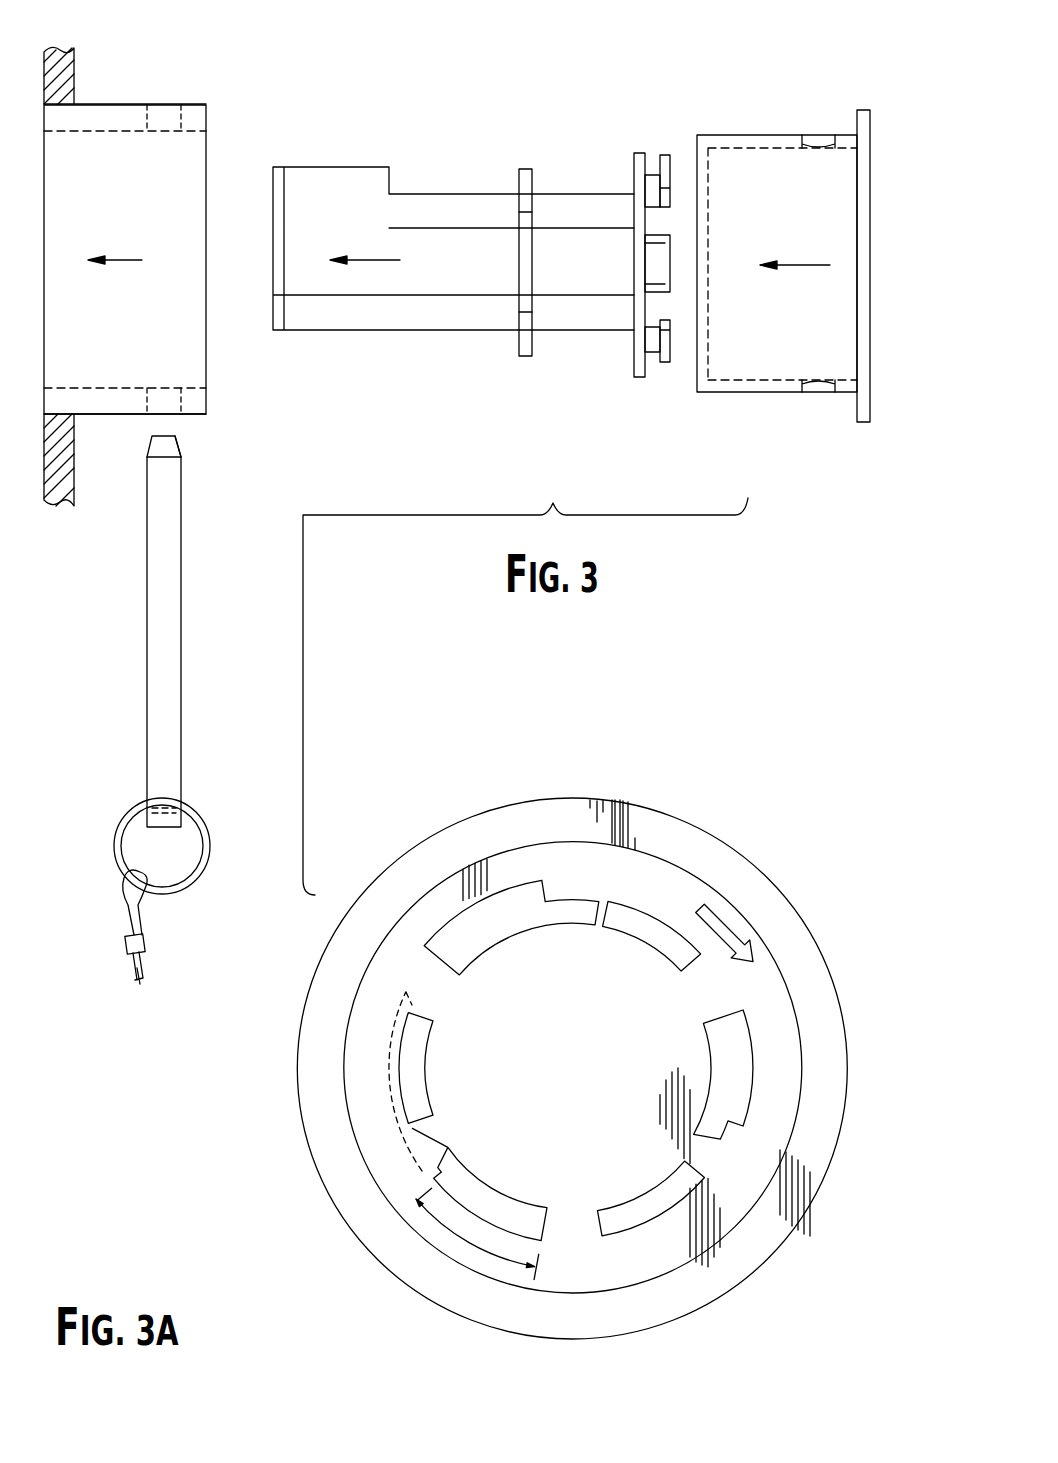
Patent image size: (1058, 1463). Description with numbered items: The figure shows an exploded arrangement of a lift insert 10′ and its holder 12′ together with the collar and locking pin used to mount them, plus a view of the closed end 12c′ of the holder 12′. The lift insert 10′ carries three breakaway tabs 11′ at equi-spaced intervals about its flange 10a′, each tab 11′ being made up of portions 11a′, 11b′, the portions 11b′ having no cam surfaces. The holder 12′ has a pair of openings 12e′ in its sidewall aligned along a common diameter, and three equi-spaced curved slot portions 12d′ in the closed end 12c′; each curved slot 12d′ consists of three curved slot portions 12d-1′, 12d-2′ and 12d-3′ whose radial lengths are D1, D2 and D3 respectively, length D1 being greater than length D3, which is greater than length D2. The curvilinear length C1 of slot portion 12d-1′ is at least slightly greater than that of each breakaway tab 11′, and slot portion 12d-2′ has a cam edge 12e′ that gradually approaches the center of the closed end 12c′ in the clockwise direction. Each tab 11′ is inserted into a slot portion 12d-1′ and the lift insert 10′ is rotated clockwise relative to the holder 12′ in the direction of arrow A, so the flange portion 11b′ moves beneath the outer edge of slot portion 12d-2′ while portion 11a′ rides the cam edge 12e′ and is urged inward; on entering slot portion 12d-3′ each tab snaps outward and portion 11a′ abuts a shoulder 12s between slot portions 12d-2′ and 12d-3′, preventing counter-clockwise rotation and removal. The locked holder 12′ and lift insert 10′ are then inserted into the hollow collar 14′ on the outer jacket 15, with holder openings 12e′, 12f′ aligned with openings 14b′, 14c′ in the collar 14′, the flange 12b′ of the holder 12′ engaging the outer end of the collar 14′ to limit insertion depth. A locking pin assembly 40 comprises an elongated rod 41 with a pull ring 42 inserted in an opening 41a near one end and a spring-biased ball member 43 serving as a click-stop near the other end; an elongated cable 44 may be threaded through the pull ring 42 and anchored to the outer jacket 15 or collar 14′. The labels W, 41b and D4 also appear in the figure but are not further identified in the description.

In FIG. 3, the wall W is at (78, 98).
In FIG. 3, the outer jacket 15 is at (72, 476).
In FIG. 3, the hollow collar 14′ is at (180, 55).
In FIG. 3, the collar opening 14b′ is at (170, 105).
In FIG. 3, the collar opening 14c′ is at (165, 418).
In FIG. 3, the lift insert 10′ is at (511, 83).
In FIG. 3, the flange 10a′ is at (638, 380).
In FIG. 3, the breakaway tab 11′ is at (673, 256).
In FIG. 3, the tab portion 11a′ is at (648, 172).
In FIG. 3, the flange portion of tab 11b′ is at (672, 158).
In FIG. 3, the holder 12′ is at (797, 249).
In FIG. 3A, the holder 12′ is at (680, 783).
In FIG. 3, the flange 12b′ is at (863, 108).
In FIG. 3, the opening / cam edge 12e′ is at (818, 137).
In FIG. 3A, the opening / cam edge 12e′ is at (393, 1129).
In FIG. 3, the holder opening 12f′ is at (818, 392).
In FIG. 3A, the holder opening 12f′ is at (393, 1041).
In FIG. 3, the locking pin assembly 40 is at (161, 705).
In FIG. 3, the elongated rod 41 is at (215, 626).
In FIG. 3, the opening 41a is at (163, 806).
In FIG. 3, the pin tip 41b is at (170, 445).
In FIG. 3, the spring-biased ball member 43 is at (182, 470).
In FIG. 3, the pull ring 42 is at (118, 832).
In FIG. 3, the elongated cable 44 is at (120, 910).
In FIG. 3A, the shoulder 12s is at (601, 910).
In FIG. 3A, the closed end 12c′ is at (474, 1057).
In FIG. 3A, the curved slot 12d′ is at (410, 1152).
In FIG. 3A, the curved slot portion 12d-1′ is at (451, 1198).
In FIG. 3A, the curved slot portion 12d-2′ is at (434, 1178).
In FIG. 3A, the curved slot portion 12d-3′ is at (414, 1088).
In FIG. 3A, the rotation arrow A is at (730, 953).
In FIG. 3A, the curvilinear length C1 is at (476, 1251).
In FIG. 3A, the radial length D1 is at (753, 1058).
In FIG. 3A, the radial length D2 is at (605, 912).
In FIG. 3A, the radial length D3 is at (399, 1056).
In FIG. 3A, the dimension D4 is at (429, 939).